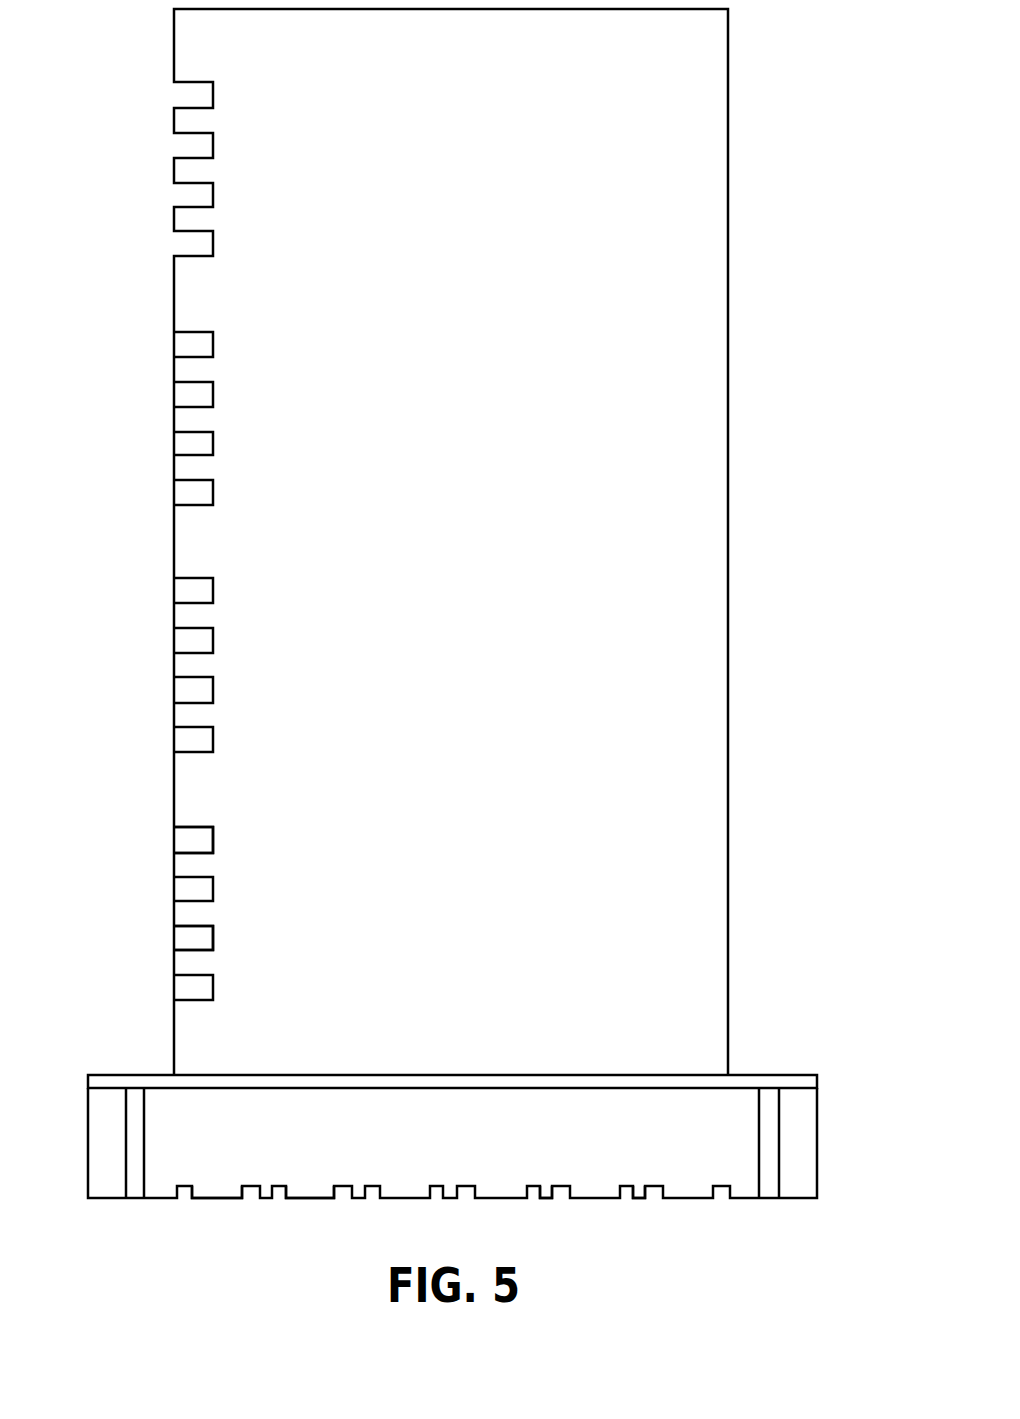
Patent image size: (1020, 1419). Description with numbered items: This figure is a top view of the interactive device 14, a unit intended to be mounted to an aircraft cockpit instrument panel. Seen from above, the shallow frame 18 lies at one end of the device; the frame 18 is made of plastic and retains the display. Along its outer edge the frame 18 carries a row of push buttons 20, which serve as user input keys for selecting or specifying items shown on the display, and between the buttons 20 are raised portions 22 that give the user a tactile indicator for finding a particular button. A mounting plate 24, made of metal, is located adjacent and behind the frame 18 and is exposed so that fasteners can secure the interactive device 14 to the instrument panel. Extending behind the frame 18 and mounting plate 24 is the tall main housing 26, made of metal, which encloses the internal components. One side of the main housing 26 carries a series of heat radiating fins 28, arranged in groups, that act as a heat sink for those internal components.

The interactive device 14 is at (441, 675).
The frame 18 is at (747, 1157).
The push buttons 20 is at (309, 1278).
The raised portions 22 is at (597, 1249).
The mounting plate 24 is at (797, 1082).
The main housing 26 is at (702, 790).
The heat radiating fins 28 is at (188, 862).